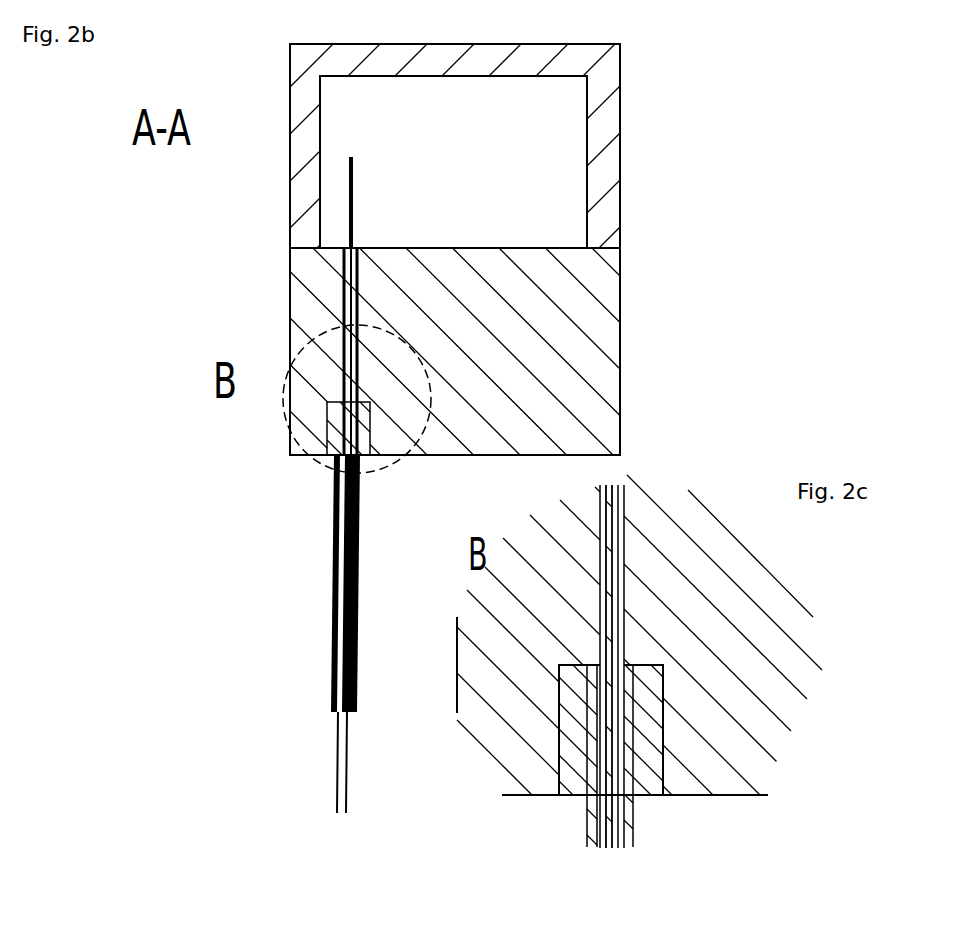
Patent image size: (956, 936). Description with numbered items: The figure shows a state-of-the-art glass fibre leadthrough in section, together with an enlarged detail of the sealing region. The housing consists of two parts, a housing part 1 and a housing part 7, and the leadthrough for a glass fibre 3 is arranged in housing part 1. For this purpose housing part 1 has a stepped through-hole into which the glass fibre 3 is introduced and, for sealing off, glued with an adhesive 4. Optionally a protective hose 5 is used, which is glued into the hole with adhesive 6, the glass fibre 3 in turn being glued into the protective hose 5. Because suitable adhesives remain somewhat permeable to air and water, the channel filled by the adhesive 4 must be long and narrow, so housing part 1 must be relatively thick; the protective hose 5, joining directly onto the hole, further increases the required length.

In FIG. 2b, the housing part 1 is at (588, 317).
In FIG. 2c, the housing part 1 is at (639, 635).
In FIG. 2b, the glass fibre 3 is at (350, 197).
In FIG. 2c, the glass fibre 3 is at (608, 851).
In FIG. 2c, the adhesive 4 is at (622, 505).
In FIG. 2c, the protective hose 5 is at (590, 823).
In FIG. 2c, the adhesive 6 is at (570, 782).
In FIG. 2b, the housing part 7 is at (605, 125).